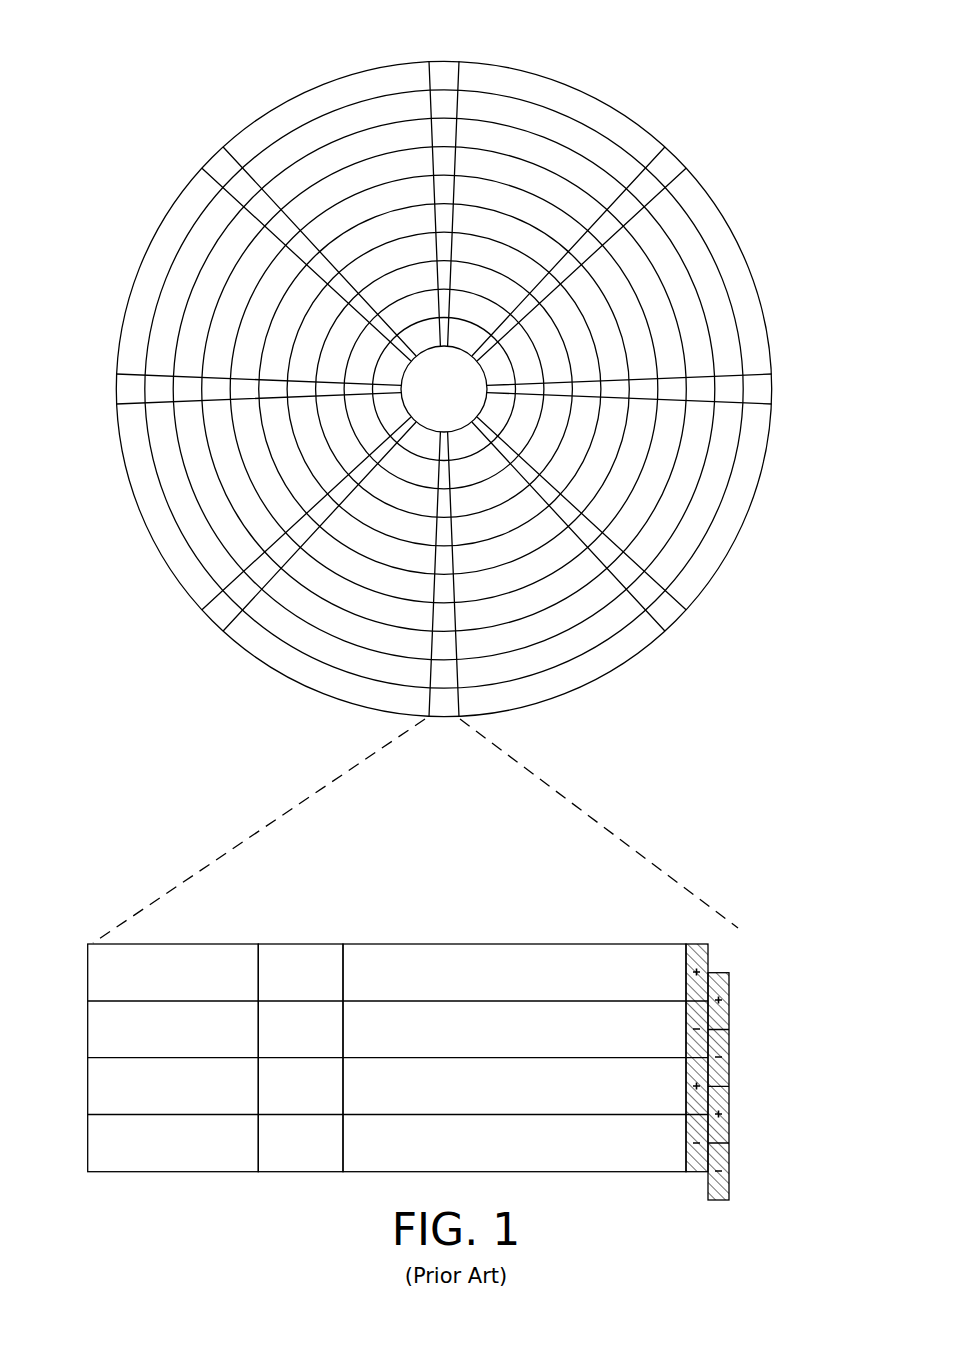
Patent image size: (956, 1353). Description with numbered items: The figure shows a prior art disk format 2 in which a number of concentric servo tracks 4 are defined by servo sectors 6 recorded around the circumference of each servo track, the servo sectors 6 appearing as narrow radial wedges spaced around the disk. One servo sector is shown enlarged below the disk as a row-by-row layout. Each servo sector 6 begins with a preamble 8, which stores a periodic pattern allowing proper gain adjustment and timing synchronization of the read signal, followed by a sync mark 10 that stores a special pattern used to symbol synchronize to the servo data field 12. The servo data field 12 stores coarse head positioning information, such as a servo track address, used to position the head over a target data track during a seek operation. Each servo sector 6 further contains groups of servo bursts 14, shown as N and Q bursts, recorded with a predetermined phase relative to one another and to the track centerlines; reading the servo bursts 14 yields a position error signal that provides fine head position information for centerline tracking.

The disk format 2 is at (445, 398).
The servo tracks 4 is at (556, 125).
The servo sectors 6 is at (444, 72).
The preamble 8 is at (180, 943).
The sync mark 10 is at (302, 943).
The servo data field 12 is at (500, 943).
The servo bursts 14 is at (724, 942).